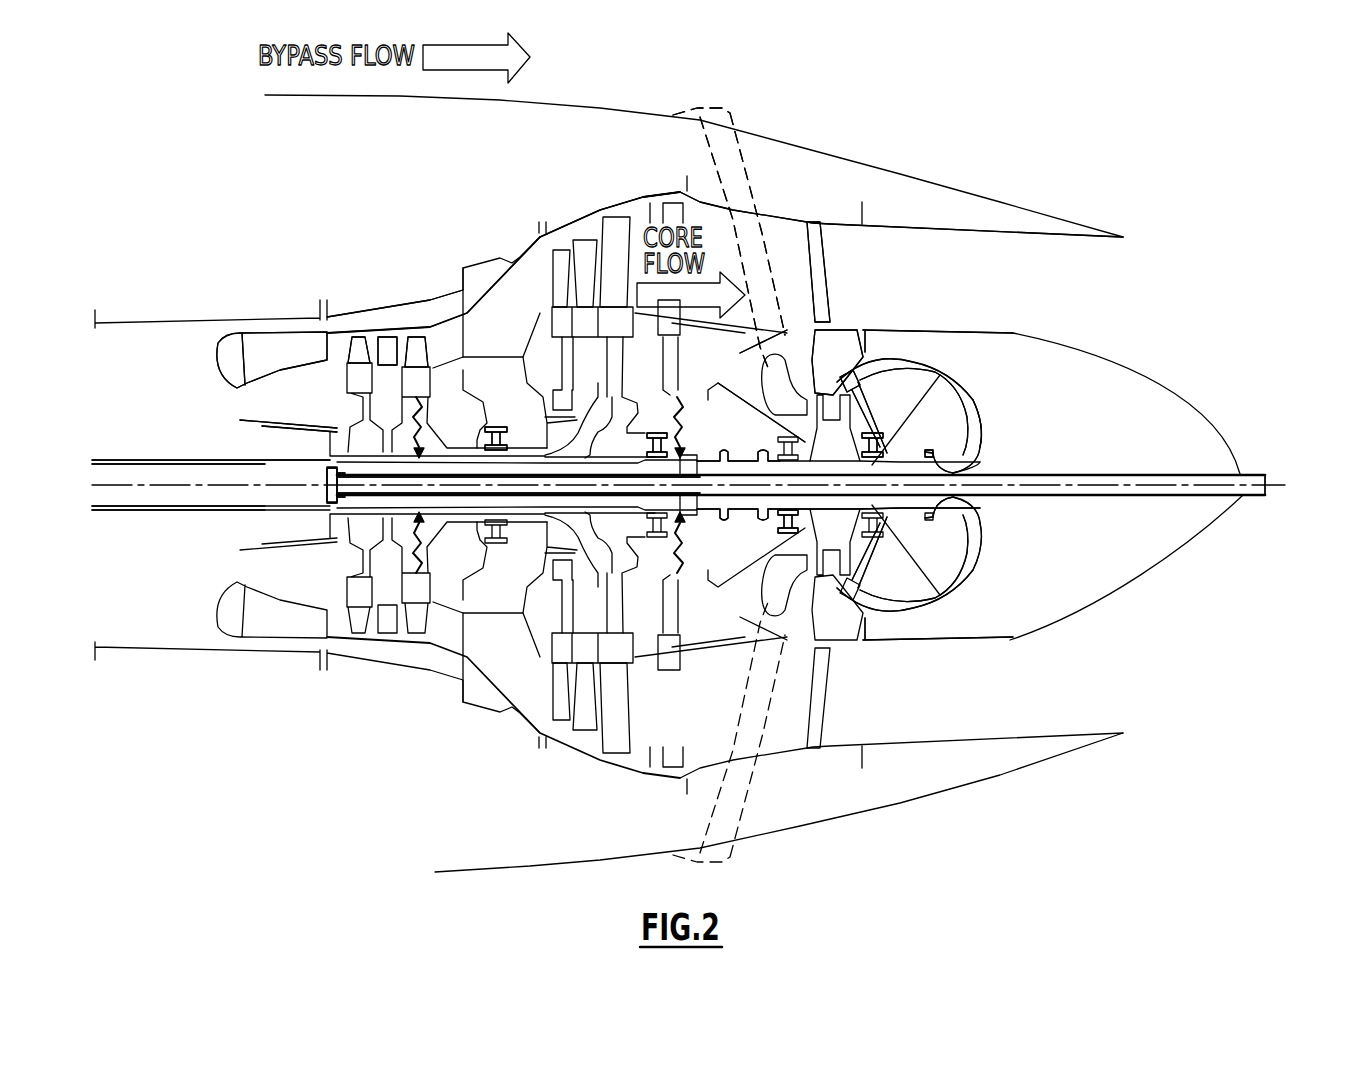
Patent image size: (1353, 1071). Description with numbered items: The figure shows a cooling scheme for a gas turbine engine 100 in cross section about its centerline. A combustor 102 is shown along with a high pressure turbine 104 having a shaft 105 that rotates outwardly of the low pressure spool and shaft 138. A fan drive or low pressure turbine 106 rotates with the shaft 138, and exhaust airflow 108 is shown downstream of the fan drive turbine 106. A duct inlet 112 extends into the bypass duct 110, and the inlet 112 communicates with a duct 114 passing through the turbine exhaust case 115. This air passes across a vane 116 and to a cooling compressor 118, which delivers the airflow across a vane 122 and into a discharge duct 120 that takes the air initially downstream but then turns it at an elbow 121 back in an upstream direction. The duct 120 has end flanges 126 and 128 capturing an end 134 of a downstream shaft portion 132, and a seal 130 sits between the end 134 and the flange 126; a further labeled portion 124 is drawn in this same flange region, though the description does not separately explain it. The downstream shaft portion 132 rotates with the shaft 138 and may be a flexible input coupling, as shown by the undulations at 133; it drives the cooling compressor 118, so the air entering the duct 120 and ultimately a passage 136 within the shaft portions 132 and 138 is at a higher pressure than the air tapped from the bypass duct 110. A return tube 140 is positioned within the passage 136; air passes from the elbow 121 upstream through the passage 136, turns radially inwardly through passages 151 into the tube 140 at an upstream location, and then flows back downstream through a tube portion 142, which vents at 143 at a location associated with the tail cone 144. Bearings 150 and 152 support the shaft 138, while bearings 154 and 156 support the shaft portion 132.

The engine 100 is at (168, 130).
The combustor 102 is at (280, 335).
The high pressure turbine 104 is at (363, 333).
The shaft 105 is at (293, 430).
The fan drive or low pressure turbine 106 is at (558, 250).
The exhaust airflow 108 is at (931, 284).
The bypass duct 110 is at (617, 57).
The duct inlet 112 is at (693, 110).
The duct 114 is at (760, 267).
The turbine exhaust case 115 is at (820, 301).
The vane 116 is at (822, 333).
The cooling compressor 118 is at (830, 377).
The discharge duct 120 is at (885, 600).
The elbow 121 is at (970, 513).
The vane 122 is at (847, 643).
The inner annular shroud 124 is at (973, 427).
The end flange 126 is at (927, 450).
The end flange 128 is at (980, 450).
The seal 130 is at (960, 575).
The downstream shaft portion 132 is at (708, 463).
The undulations 133 is at (720, 520).
The end 134 is at (980, 465).
The passage 136 is at (922, 363).
The shaft 138 is at (285, 463).
The return tube 140 is at (330, 490).
The tube portion 142 is at (1068, 478).
The vent 143 is at (1267, 481).
The tail cone 144 is at (1185, 405).
The bearing 150 is at (485, 438).
The passages 151 is at (350, 478).
The bearing 152 is at (645, 434).
The bearing 154 is at (783, 512).
The bearing 156 is at (867, 550).